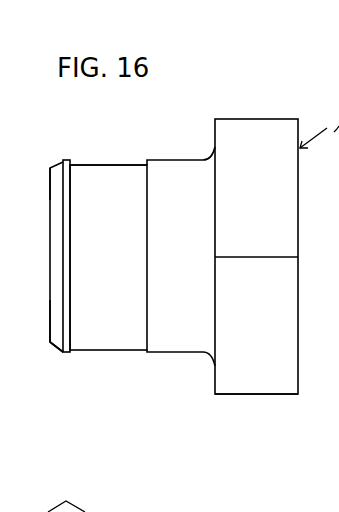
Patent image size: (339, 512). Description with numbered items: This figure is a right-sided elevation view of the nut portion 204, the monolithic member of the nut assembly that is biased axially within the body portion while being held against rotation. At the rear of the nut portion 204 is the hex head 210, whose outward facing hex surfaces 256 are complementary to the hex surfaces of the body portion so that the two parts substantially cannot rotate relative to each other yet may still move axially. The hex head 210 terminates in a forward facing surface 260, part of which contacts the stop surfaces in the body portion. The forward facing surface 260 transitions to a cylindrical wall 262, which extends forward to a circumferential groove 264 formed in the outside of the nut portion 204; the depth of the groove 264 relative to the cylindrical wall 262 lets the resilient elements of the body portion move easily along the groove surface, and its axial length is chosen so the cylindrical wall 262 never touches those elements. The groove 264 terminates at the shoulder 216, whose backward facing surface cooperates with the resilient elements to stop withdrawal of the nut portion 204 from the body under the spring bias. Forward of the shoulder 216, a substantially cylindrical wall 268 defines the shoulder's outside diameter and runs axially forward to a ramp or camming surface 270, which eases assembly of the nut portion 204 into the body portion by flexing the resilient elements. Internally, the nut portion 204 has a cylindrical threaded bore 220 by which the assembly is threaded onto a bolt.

The nut portion 204 is at (167, 123).
The hex head 210 is at (0, 370).
The shoulder 216 is at (65, 359).
The cylindrical threaded bore 220 is at (0, 190).
The hex surfaces 256 is at (245, 132).
The forward facing surface 260 is at (215, 372).
The cylindrical wall 262 is at (178, 352).
The circumferential groove 264 is at (115, 176).
The cylindrical wall 268 is at (69, 160).
The ramp surface 270 is at (55, 260).